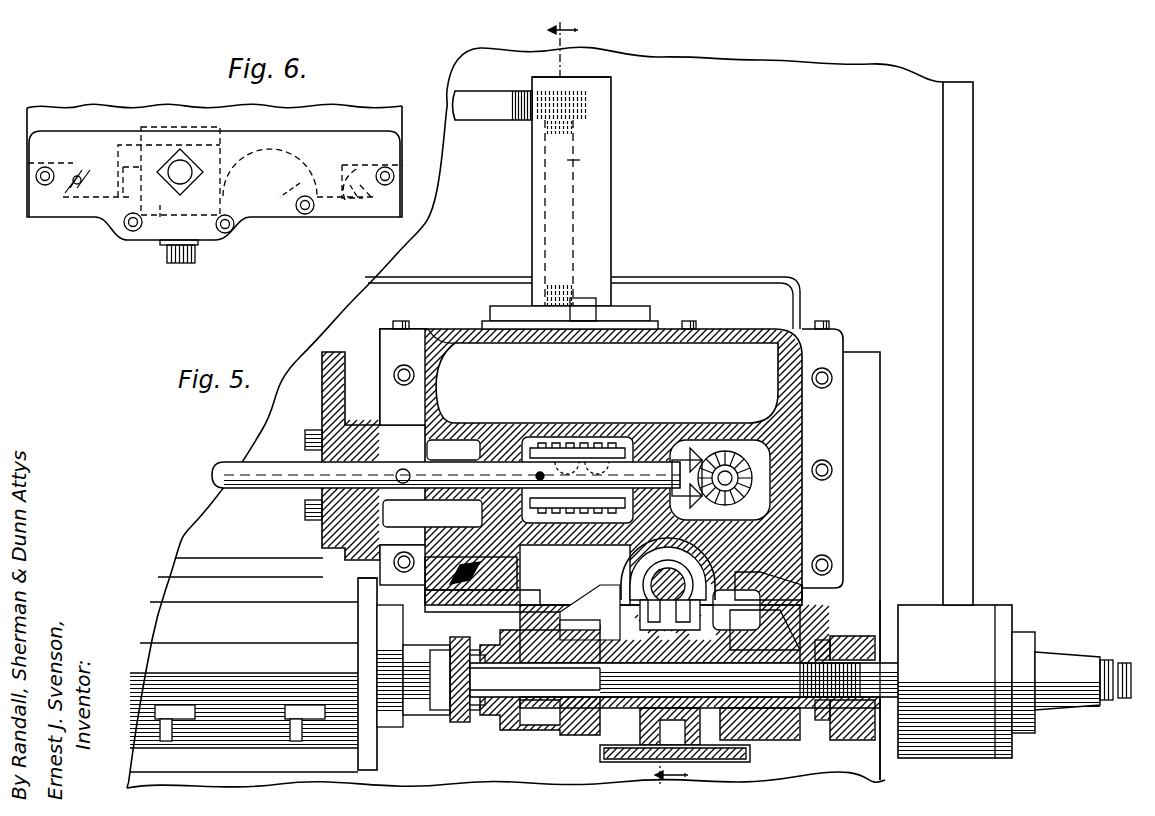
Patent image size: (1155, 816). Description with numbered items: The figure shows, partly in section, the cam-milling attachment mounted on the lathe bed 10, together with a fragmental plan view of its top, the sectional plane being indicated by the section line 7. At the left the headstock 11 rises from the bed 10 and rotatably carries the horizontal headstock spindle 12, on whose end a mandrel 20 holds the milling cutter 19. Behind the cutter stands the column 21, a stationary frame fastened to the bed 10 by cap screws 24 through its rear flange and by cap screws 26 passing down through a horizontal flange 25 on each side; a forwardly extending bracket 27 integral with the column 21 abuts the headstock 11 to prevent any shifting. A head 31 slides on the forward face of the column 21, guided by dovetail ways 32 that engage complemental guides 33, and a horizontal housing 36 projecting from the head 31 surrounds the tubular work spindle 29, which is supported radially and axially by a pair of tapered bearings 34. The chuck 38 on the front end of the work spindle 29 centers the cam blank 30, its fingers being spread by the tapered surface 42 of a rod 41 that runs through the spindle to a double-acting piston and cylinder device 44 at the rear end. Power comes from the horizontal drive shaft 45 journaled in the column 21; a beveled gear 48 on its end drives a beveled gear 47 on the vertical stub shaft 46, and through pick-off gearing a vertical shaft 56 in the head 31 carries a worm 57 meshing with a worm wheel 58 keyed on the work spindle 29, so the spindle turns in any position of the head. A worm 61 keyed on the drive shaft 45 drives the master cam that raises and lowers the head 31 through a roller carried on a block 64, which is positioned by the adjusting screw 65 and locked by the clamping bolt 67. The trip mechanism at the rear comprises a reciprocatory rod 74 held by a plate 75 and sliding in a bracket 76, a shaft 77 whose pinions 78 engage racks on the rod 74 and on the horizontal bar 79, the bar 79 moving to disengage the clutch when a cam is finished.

In FIG. 5, the section line 7- 7 is at (608, 403).
In FIG. 5, the bed 10 is at (870, 768).
In FIG. 5, the headstock 11 is at (262, 631).
In FIG. 5, the headstock spindle 12 is at (418, 708).
In FIG. 5, the milling cutter 19 is at (460, 722).
In FIG. 5, the mandrel 20 is at (438, 718).
In FIG. 5, the column 21 is at (735, 333).
In FIG. 5, the cap screws 24 is at (403, 320).
In FIG. 5, the horizontal flange 25 is at (832, 437).
In FIG. 5, the cap screws 26 is at (408, 367).
In FIG. 5, the bracket 27 is at (366, 645).
In FIG. 5, the work spindle 29 is at (600, 720).
In FIG. 5, the cam blank 30 is at (474, 712).
In FIG. 5, the head 31 is at (790, 622).
In FIG. 6, the dovetail ways 32 is at (358, 192).
In FIG. 5, the dovetail ways 32 is at (806, 586).
In FIG. 6, the complemental guides 33 is at (100, 185).
In FIG. 5, the complemental guides 33 is at (740, 555).
In FIG. 5, the tapered bearings 34 is at (562, 735).
In FIG. 5, the horizontal housing 36 is at (800, 738).
In FIG. 5, the chuck 38 is at (476, 654).
In FIG. 5, the rod 41 is at (530, 722).
In FIG. 5, the tapered surface 42 is at (440, 650).
In FIG. 5, the piston and cylinder device 44 is at (990, 612).
In FIG. 5, the drive shaft 45 is at (270, 488).
In FIG. 5, the stub shaft 46 is at (730, 458).
In FIG. 5, the beveled gear 47 is at (722, 464).
In FIG. 5, the beveled gear 48 is at (692, 448).
In FIG. 5, the vertical shaft 56 is at (656, 585).
In FIG. 5, the worm 57 is at (640, 568).
In FIG. 5, the worm wheel 58 is at (686, 757).
In FIG. 5, the worm 61 is at (575, 445).
In FIG. 6, the block 64 is at (160, 208).
In FIG. 6, the adjusting screw 65 is at (180, 165).
In FIG. 6, the clamping bolt 67 is at (183, 262).
In FIG. 5, the reciprocatory rod 74 is at (596, 305).
In FIG. 5, the plate 75 is at (597, 78).
In FIG. 5, the bracket 76 is at (600, 207).
In FIG. 5, the shaft 77 is at (567, 162).
In FIG. 5, the pinion 78 is at (573, 133).
In FIG. 5, the bar 79 is at (492, 108).